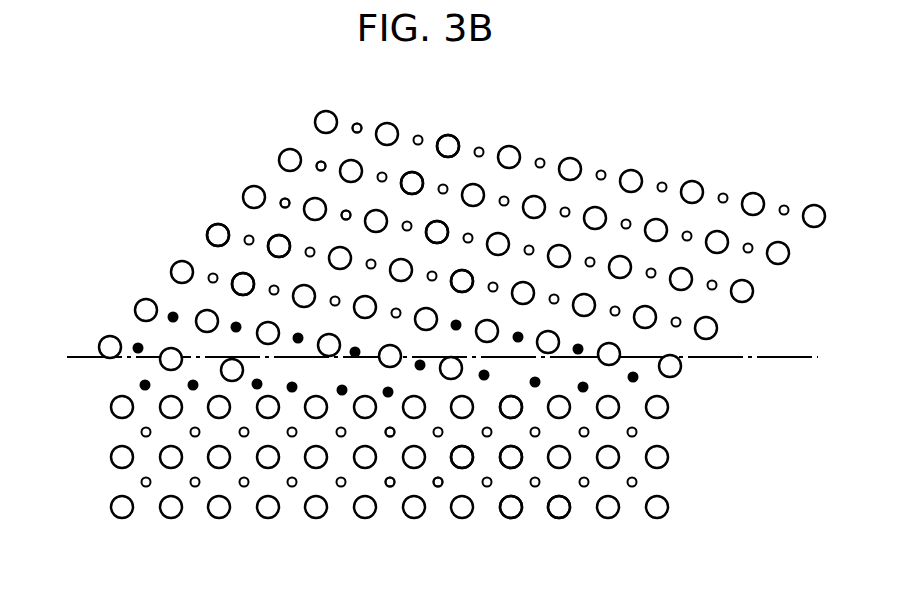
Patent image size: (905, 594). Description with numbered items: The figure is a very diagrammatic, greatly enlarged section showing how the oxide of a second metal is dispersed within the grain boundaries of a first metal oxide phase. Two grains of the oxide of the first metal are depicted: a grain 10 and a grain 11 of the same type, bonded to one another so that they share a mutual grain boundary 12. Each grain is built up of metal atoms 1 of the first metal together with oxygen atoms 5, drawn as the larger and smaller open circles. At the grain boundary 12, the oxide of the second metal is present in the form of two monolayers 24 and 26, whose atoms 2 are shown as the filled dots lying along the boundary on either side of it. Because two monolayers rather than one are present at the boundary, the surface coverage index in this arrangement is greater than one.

The metal atoms 1 is at (344, 212).
The atoms of the second metal M2 2 is at (355, 356).
The oxygen atoms 5 is at (242, 281).
The grain 10 is at (102, 431).
The grain 11 is at (176, 248).
The grain boundary 12 is at (80, 356).
The monolayer 24 is at (173, 312).
The monolayer 26 is at (141, 386).